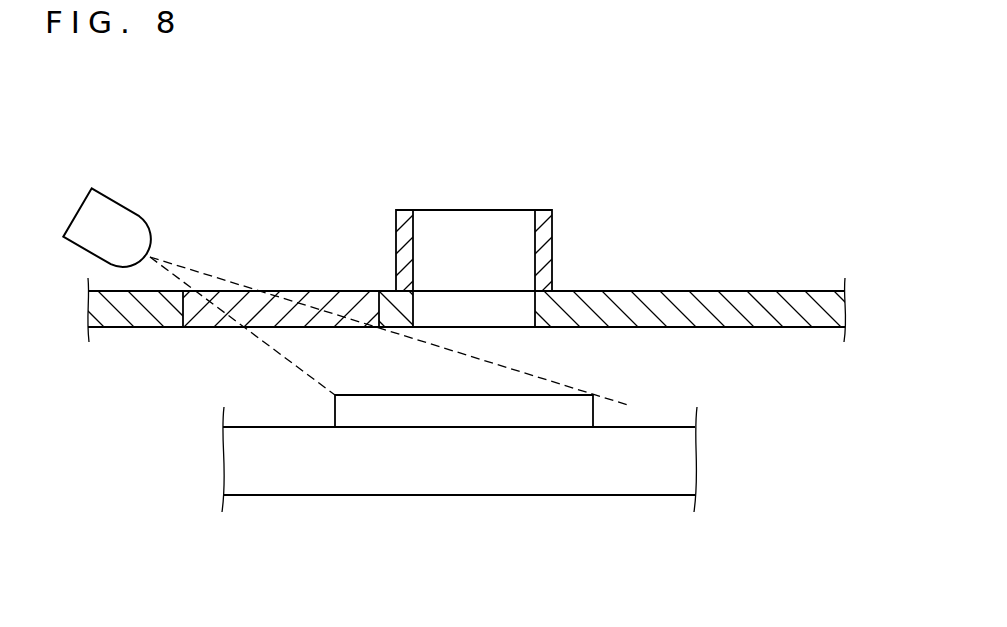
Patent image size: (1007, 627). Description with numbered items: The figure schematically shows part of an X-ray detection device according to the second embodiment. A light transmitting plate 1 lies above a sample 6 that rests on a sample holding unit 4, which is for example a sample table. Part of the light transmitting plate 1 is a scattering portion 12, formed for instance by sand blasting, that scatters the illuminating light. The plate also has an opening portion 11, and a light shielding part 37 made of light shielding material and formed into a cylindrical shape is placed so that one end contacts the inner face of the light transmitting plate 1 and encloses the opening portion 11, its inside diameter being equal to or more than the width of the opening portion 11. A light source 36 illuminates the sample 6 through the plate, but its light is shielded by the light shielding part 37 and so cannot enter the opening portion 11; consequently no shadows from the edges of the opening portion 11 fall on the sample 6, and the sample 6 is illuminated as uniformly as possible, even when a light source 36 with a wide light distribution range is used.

The light transmitting plate 1 is at (145, 317).
The scattering portion 12 is at (333, 297).
The opening portion 11 is at (532, 315).
The light shielding part 37 is at (553, 222).
The light source 36 is at (113, 208).
The sample 6 is at (372, 412).
The sample holding unit 4 is at (525, 457).